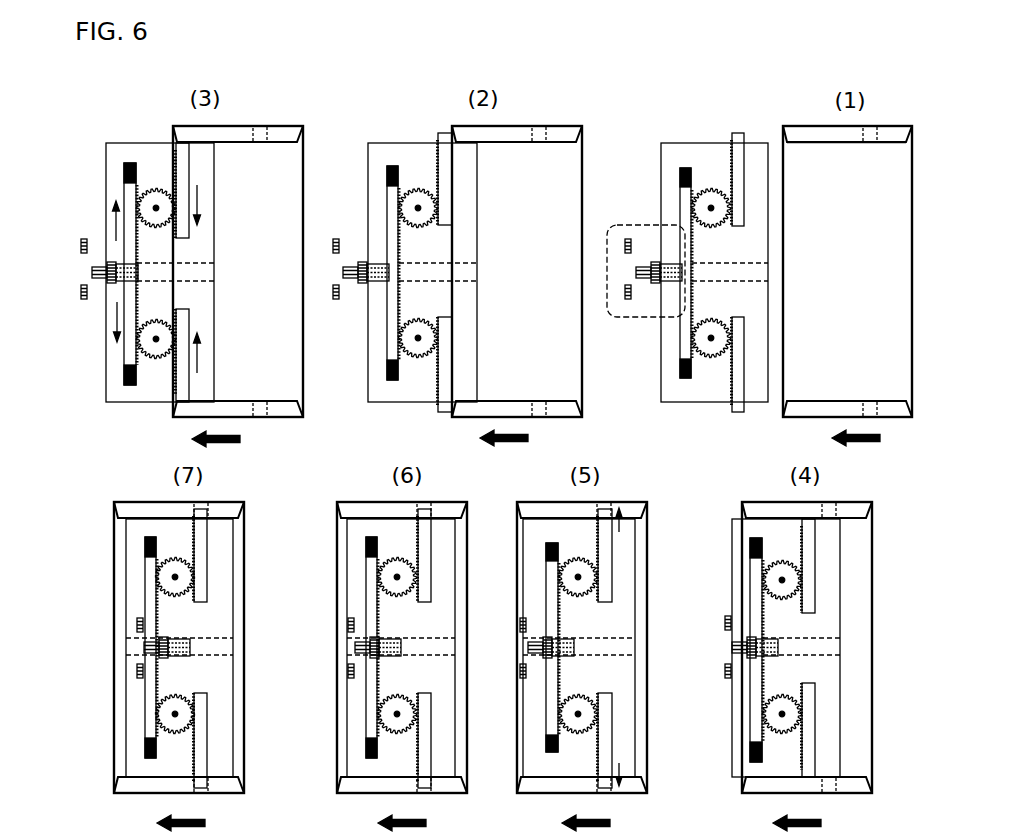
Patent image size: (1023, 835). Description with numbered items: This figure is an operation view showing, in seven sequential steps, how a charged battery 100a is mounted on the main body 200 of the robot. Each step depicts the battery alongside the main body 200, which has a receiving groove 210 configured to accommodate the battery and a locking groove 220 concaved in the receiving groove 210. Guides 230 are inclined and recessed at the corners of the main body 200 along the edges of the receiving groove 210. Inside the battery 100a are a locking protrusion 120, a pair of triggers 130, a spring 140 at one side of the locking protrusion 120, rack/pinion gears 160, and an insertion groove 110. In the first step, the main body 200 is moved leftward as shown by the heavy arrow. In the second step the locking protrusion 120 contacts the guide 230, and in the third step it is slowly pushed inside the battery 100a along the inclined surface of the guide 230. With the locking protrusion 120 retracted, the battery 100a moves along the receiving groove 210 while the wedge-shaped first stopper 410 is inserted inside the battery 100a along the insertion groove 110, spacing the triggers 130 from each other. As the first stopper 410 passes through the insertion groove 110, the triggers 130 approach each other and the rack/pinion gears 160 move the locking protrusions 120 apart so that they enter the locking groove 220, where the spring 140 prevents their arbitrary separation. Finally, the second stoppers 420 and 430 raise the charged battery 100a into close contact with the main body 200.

The charged battery 100a is at (700, 412).
The insertion groove 110 is at (723, 282).
The locking protrusion 120 is at (739, 156).
The trigger 130 is at (683, 200).
The spring 140 is at (683, 166).
The rack/pinion gears 160 is at (708, 176).
The main body 200 is at (890, 249).
The receiving groove 210 is at (833, 143).
The locking groove 220 is at (880, 134).
The guide 230 is at (788, 142).
The first stopper 410 is at (679, 286).
The second stopper 420 is at (628, 238).
The second stopper 430 is at (628, 300).